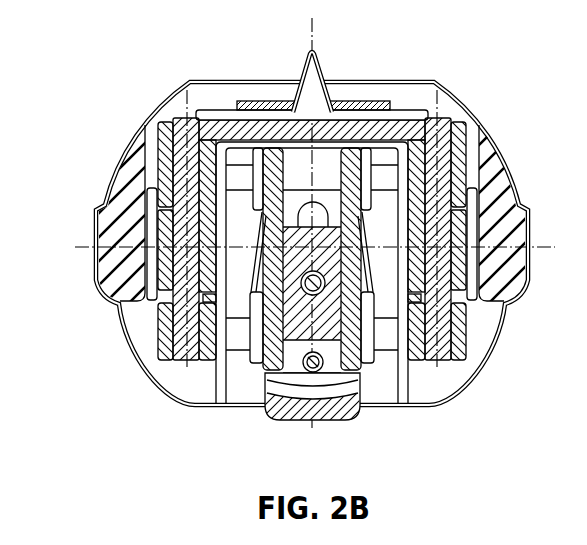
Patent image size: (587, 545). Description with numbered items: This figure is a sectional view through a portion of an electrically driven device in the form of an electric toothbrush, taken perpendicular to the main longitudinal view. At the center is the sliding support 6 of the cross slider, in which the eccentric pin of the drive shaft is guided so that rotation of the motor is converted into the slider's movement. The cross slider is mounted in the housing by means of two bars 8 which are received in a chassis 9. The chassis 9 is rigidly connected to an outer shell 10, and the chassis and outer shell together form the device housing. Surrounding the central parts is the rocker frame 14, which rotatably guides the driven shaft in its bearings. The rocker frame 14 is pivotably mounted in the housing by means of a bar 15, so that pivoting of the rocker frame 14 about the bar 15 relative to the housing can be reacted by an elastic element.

The sliding support 6 is at (295, 193).
The bars 8 is at (233, 333).
The chassis 9 is at (165, 143).
The outer shell 10 is at (130, 290).
The rocker frame 14 is at (165, 233).
The bar 15 is at (182, 128).